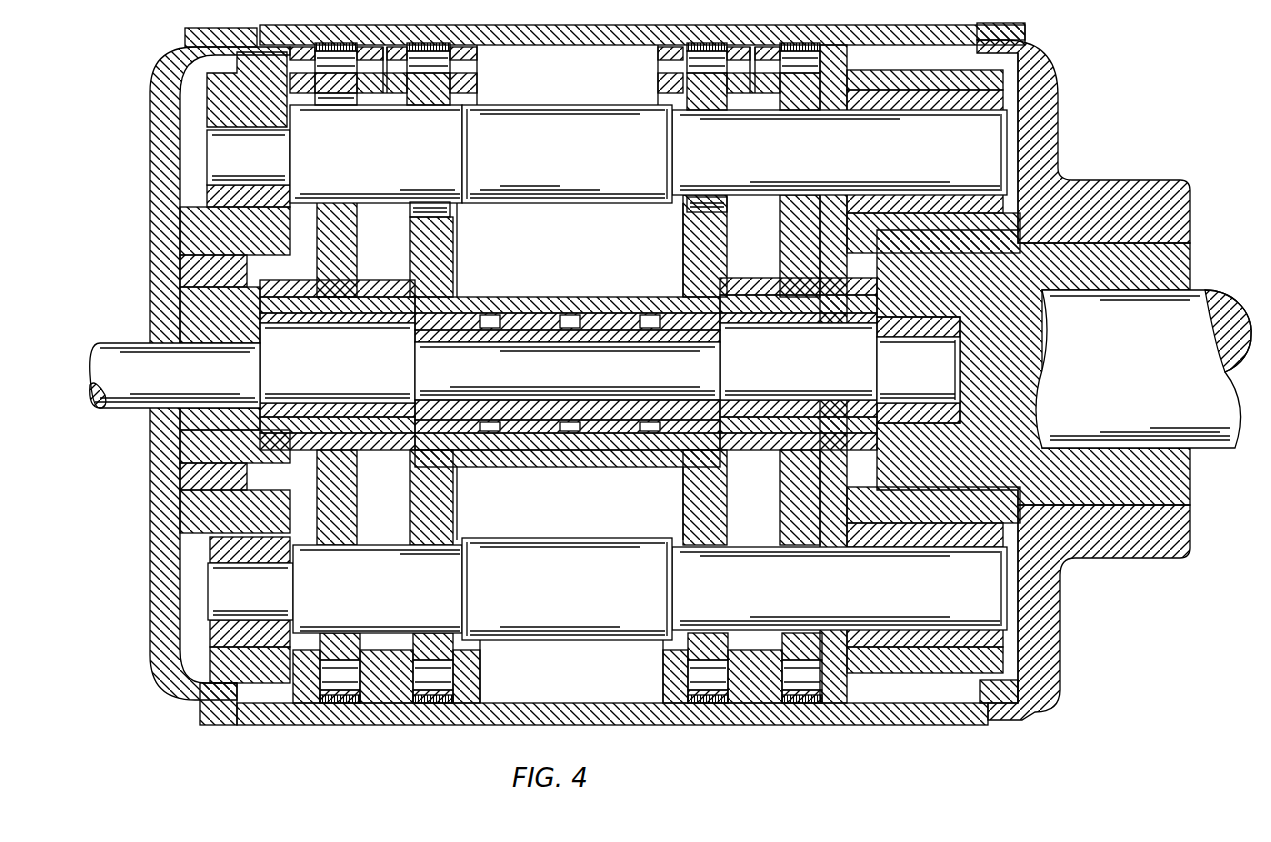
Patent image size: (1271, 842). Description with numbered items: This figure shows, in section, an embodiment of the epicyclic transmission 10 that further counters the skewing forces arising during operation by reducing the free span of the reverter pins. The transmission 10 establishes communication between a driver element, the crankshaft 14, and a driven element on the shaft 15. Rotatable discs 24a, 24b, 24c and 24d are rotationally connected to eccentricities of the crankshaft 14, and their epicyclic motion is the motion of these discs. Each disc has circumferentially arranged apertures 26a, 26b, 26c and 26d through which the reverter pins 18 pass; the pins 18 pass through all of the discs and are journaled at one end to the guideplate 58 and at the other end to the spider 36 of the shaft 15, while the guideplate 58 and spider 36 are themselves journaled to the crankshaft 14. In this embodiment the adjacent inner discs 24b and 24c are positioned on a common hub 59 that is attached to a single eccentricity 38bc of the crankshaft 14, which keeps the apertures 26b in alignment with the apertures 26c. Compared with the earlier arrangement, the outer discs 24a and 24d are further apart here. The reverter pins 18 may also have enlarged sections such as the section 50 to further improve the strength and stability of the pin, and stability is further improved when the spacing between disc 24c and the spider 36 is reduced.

The transmission 10 is at (1082, 133).
The crankshaft 14 is at (132, 356).
The shaft 15 is at (1188, 318).
The reverter pins 18 is at (590, 593).
The disc 24a is at (345, 92).
The disc 24b is at (430, 95).
The disc 24c is at (707, 98).
The disc 24d is at (788, 83).
The aperture 26a is at (333, 105).
The aperture 26b is at (450, 207).
The aperture 26c is at (697, 204).
The aperture 26d is at (810, 98).
The spider 36 is at (1030, 328).
The eccentricity 38bc is at (628, 383).
The enlarged section 50 is at (540, 110).
The guideplate 58 is at (195, 515).
The common hub 59 is at (617, 460).